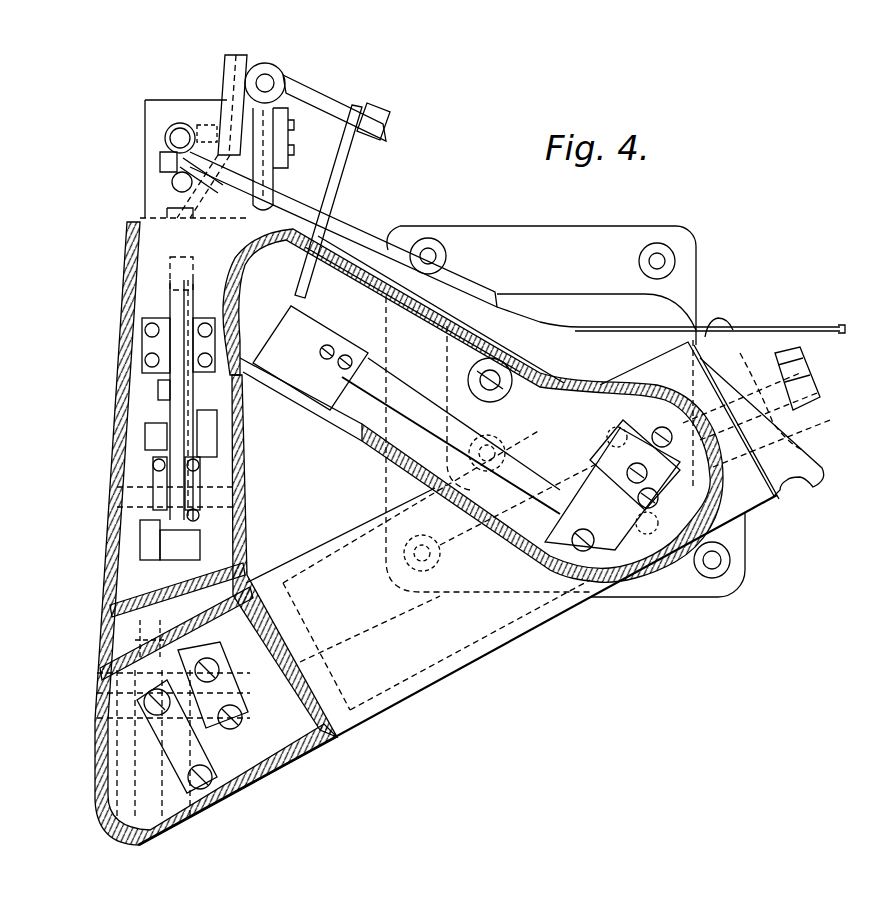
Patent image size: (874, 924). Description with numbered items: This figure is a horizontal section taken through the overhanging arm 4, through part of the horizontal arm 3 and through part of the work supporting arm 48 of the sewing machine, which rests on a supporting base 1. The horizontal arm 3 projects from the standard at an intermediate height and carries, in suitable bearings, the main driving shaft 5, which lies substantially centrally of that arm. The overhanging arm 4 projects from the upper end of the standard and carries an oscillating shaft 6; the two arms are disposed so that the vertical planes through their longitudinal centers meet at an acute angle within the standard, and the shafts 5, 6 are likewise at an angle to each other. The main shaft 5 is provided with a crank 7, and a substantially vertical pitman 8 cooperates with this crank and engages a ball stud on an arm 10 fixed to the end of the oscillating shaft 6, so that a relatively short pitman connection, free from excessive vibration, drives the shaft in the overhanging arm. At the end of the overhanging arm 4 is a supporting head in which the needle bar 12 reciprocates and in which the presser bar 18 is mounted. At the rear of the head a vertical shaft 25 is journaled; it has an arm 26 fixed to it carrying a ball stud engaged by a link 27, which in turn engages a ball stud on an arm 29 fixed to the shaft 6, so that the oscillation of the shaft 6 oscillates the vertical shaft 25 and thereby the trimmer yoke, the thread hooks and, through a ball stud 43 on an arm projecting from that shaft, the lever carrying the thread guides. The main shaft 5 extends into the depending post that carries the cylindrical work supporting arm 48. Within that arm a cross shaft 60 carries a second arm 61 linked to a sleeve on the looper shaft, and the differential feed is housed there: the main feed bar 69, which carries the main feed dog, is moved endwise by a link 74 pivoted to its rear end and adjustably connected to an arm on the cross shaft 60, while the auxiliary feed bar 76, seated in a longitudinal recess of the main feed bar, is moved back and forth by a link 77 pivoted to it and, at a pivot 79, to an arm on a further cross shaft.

The supporting base 1 is at (683, 273).
The horizontal arm 3 is at (447, 670).
The overhanging arm 4 is at (400, 455).
The main driving shaft 5 is at (392, 603).
The oscillating shaft 6 is at (407, 387).
The crank 7 is at (657, 472).
The pitman 8 is at (700, 497).
The arm 10 is at (596, 465).
The needle bar 12 is at (172, 184).
The presser bar 18 is at (178, 142).
The vertical shaft 25 is at (272, 83).
The arm 26 is at (310, 107).
The link 27 is at (352, 153).
The arm 29 is at (318, 322).
The ball stud 43 is at (227, 80).
The work supporting arm 48 is at (125, 460).
The cross shaft 60 is at (112, 700).
The second arm 61 is at (127, 637).
The main feed bar 69 is at (170, 323).
The link 74 is at (128, 556).
The auxiliary feed bar 76 is at (180, 338).
The link 77 is at (170, 408).
The pivot 79 is at (225, 498).